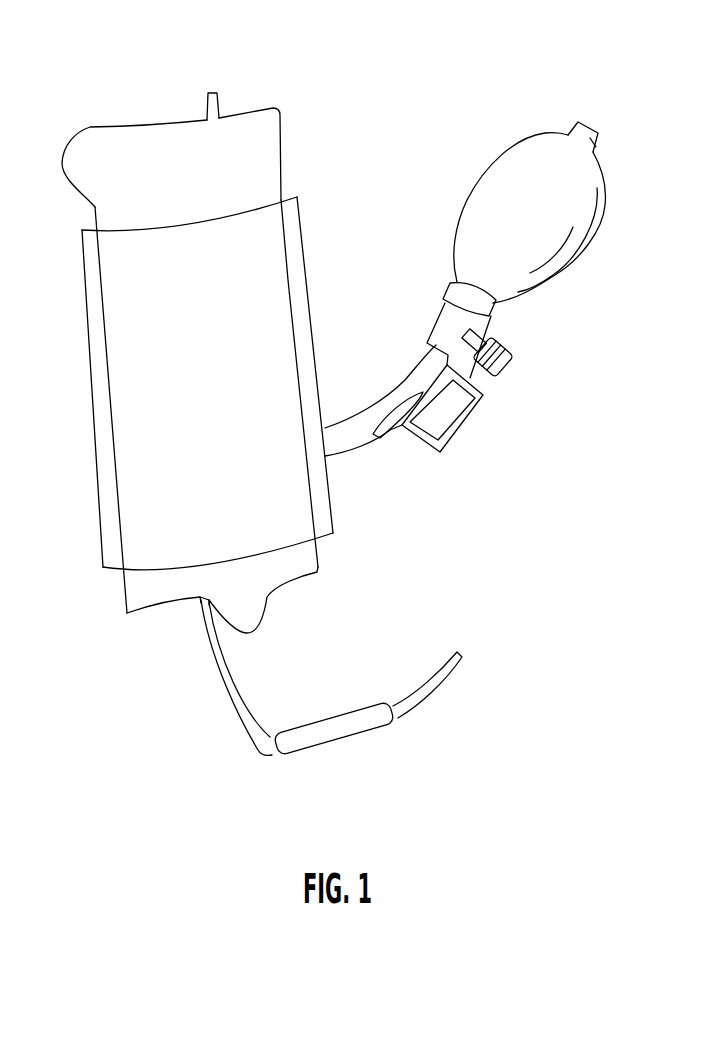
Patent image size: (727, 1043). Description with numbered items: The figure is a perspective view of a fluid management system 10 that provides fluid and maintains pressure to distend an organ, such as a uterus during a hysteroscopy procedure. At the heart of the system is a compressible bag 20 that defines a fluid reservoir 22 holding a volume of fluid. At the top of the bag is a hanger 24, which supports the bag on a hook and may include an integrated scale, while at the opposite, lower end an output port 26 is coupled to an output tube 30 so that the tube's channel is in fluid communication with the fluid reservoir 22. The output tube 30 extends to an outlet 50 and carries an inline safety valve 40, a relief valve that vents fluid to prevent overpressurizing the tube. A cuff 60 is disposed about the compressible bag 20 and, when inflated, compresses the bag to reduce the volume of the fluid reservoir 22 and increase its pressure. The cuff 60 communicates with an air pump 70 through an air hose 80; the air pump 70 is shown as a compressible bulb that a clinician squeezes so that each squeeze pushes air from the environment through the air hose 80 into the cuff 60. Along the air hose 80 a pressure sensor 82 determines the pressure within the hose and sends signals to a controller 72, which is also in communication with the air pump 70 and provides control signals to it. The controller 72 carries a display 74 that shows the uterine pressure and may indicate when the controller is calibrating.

The fluid management system 10 is at (323, 35).
The compressible bag 20 is at (125, 140).
The fluid reservoir 22 is at (242, 155).
The hanger 24 is at (206, 105).
The output port 26 is at (205, 614).
The output tube 30 is at (228, 718).
The safety valve 40 is at (340, 735).
The outlet 50 is at (460, 653).
The cuff 60 is at (300, 225).
The air pump 70 is at (543, 273).
The controller 72 is at (477, 403).
The display 74 is at (436, 437).
The air hose 80 is at (384, 408).
The pressure sensor 82 is at (388, 426).